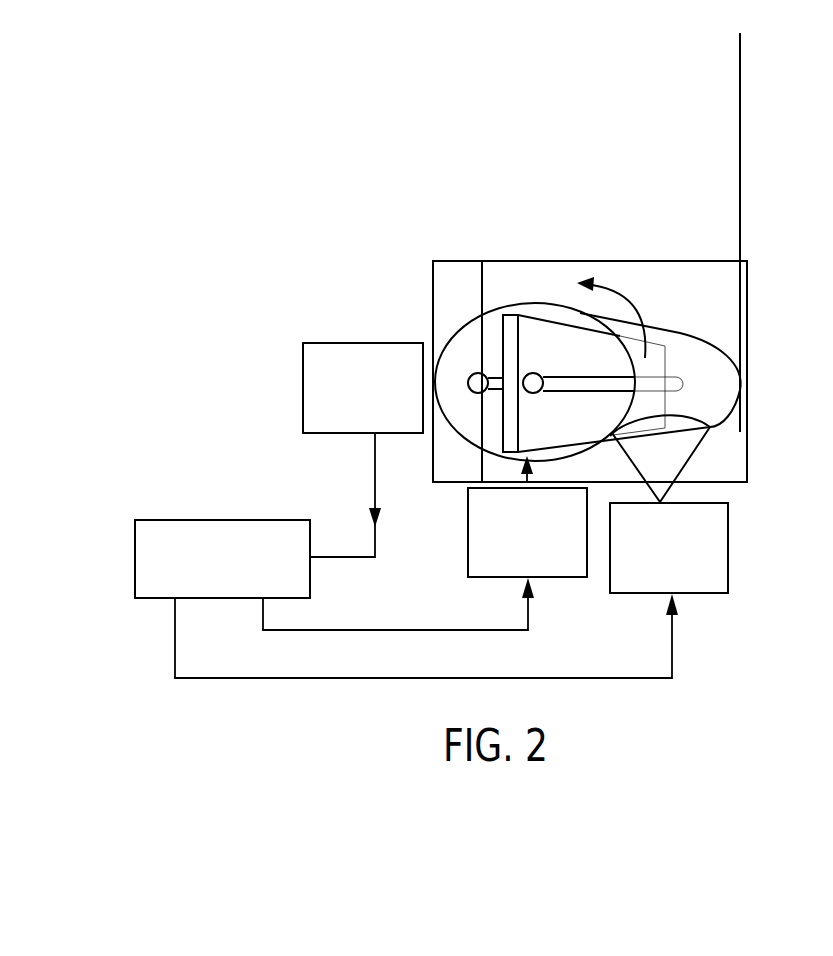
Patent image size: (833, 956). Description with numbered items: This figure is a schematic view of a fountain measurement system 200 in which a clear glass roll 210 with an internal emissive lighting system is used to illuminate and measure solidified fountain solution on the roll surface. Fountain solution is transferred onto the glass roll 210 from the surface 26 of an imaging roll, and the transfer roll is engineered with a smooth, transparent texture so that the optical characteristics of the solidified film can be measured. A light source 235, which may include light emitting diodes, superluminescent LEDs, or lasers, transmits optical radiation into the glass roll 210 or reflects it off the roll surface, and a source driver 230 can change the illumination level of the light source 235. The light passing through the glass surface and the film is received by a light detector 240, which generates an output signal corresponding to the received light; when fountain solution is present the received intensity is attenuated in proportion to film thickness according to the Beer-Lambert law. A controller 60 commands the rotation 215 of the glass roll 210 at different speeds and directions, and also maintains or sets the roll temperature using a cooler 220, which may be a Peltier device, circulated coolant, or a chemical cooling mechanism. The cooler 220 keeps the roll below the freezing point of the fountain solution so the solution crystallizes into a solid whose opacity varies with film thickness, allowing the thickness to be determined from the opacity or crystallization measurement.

The fountain measurement system 200 is at (134, 151).
The surface of imaging roll 26 is at (742, 98).
The glass roll 210 is at (512, 297).
The rotation 215 is at (613, 288).
The light source 235 is at (457, 350).
The light detector 240 is at (302, 400).
The controller 60 is at (135, 570).
The source driver 230 is at (468, 558).
The cooler 220 is at (728, 570).